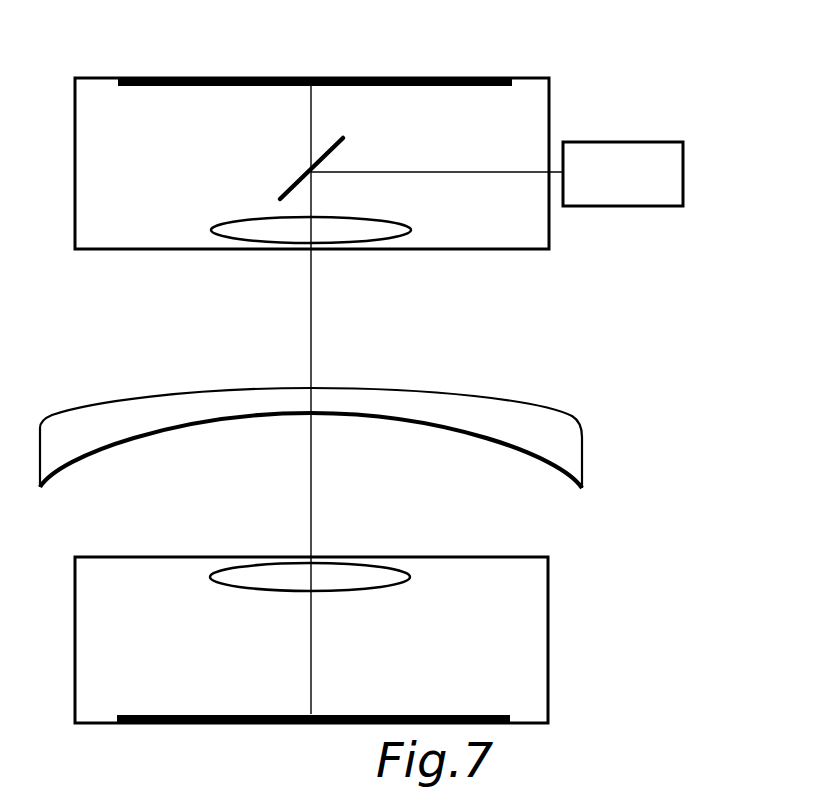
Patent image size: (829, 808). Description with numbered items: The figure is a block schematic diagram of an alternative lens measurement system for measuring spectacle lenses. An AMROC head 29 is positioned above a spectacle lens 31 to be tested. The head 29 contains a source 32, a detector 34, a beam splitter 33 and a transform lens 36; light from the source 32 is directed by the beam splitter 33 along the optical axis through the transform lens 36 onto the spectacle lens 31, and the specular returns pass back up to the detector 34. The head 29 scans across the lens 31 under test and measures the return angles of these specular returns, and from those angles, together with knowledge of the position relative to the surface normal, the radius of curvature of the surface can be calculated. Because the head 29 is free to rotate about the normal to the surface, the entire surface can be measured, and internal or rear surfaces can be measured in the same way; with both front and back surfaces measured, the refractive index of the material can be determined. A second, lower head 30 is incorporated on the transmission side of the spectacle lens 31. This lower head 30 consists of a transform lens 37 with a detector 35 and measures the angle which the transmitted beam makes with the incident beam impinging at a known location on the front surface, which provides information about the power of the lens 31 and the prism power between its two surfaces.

The AMROC head 29 is at (508, 139).
The head 30 is at (495, 625).
The spectacle lens 31 is at (554, 425).
The source 32 is at (655, 142).
The beam splitter 33 is at (297, 175).
The detector 34 is at (165, 78).
The detector 35 is at (162, 717).
The transform lens 36 is at (242, 232).
The transform lens 37 is at (238, 571).